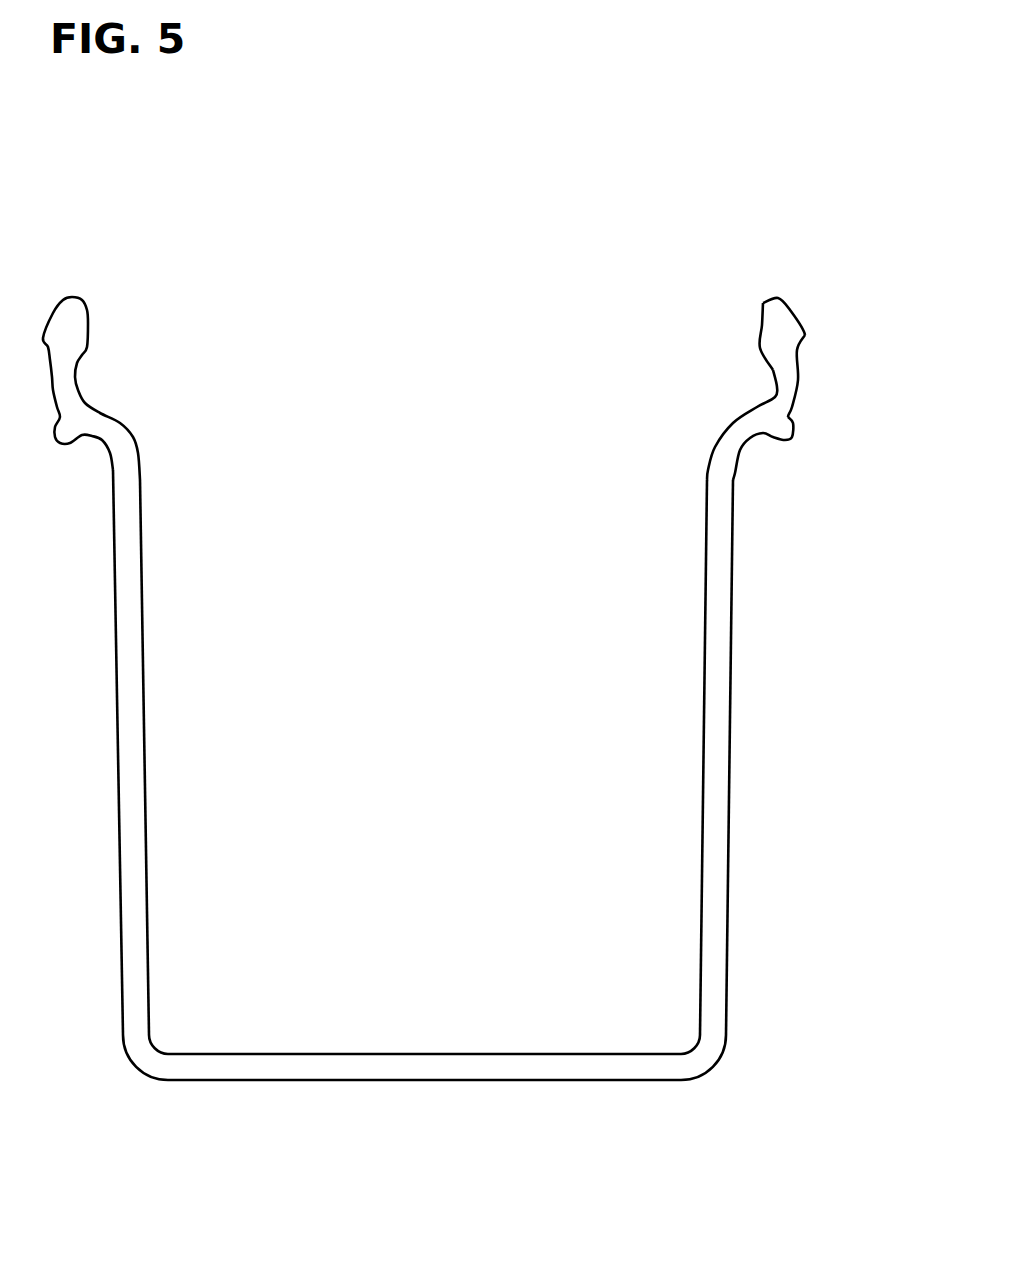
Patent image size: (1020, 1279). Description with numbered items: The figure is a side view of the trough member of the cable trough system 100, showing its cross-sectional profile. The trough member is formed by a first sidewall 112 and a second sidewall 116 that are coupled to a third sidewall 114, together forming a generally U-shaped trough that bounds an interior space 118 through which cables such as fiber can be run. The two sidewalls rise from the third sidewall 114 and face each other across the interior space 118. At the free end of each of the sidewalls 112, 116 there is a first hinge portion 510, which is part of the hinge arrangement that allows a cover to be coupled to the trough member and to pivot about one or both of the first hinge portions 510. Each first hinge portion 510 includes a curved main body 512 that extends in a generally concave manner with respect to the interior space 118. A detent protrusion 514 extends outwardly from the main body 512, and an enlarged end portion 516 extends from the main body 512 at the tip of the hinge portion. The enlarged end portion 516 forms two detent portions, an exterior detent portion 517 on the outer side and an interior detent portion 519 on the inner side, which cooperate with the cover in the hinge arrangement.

The cable trough system 100 is at (824, 152).
The first sidewall 112 is at (728, 767).
The third sidewall 114 is at (435, 1072).
The second sidewall 116 is at (118, 748).
The interior space 118 is at (445, 815).
The first hinge portion 510 is at (158, 292).
The curved main body 512 is at (777, 390).
The detent protrusion 514 is at (787, 437).
The enlarged end portion 516 is at (777, 308).
The exterior detent portion 517 is at (803, 335).
The interior detent portion 519 is at (762, 342).